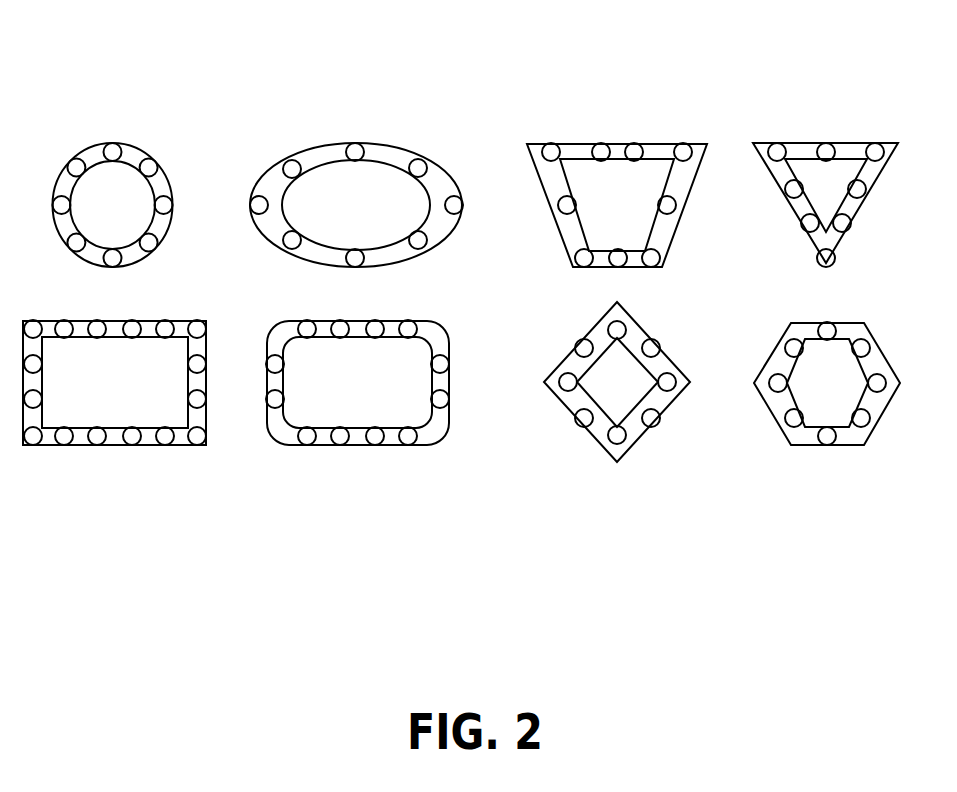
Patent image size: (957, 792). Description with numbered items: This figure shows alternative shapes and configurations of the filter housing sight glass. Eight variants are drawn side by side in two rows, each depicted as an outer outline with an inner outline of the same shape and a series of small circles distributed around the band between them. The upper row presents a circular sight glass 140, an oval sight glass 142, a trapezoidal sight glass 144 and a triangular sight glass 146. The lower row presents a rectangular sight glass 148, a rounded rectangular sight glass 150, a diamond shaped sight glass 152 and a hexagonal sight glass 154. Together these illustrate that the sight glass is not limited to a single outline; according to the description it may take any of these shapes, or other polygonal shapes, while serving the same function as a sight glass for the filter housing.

The circular sight glass 140 is at (107, 90).
The oval sight glass 142 is at (347, 90).
The trapezoidal sight glass 144 is at (610, 90).
The triangular sight glass 146 is at (835, 90).
The rectangular sight glass 148 is at (107, 498).
The rounded rectangular sight glass 150 is at (347, 498).
The diamond shaped sight glass 152 is at (610, 498).
The hexagonal sight glass 154 is at (833, 498).